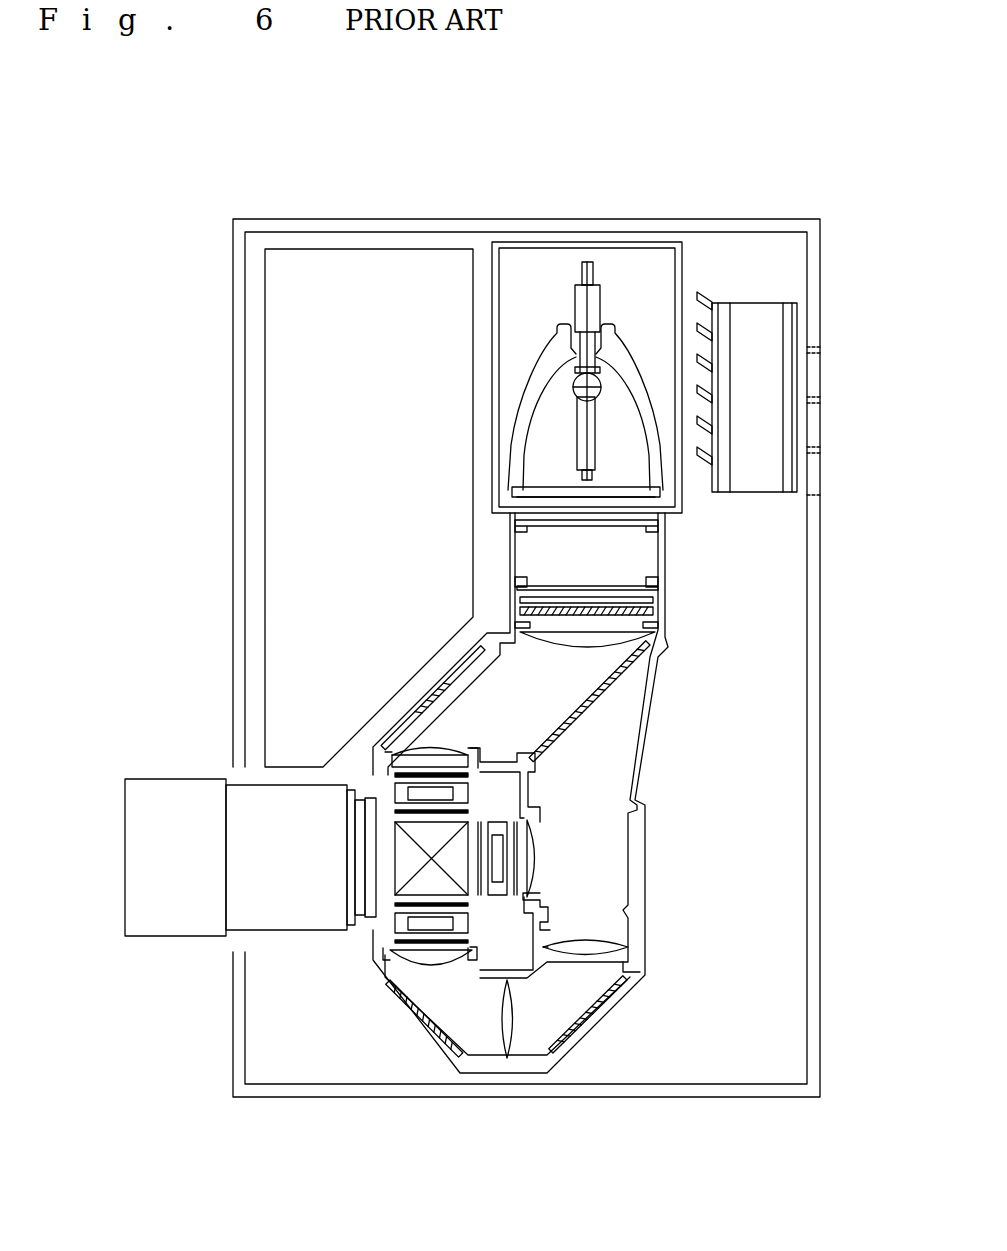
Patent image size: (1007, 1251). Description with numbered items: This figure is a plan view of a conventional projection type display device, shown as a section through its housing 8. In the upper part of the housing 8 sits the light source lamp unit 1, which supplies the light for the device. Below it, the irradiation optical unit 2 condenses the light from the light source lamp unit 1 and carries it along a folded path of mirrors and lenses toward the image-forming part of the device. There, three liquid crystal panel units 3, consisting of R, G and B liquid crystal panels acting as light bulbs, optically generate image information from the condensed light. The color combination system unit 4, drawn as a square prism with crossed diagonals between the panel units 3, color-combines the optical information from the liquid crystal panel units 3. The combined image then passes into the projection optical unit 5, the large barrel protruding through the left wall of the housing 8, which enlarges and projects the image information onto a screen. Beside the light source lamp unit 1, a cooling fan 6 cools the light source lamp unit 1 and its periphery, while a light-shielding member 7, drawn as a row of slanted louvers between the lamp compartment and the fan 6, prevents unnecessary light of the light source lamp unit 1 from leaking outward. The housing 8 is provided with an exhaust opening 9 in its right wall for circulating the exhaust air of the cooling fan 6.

The light source lamp unit 1 is at (597, 380).
The irradiation optical unit 2 is at (600, 780).
The liquid crystal panel units 3 is at (432, 795).
The color combination system unit 4 is at (400, 852).
The projection optical unit 5 is at (278, 863).
The cooling fan 6 is at (750, 413).
The light-shielding member 7 is at (713, 297).
The housing 8 is at (821, 573).
The exhaust opening 9 is at (823, 368).